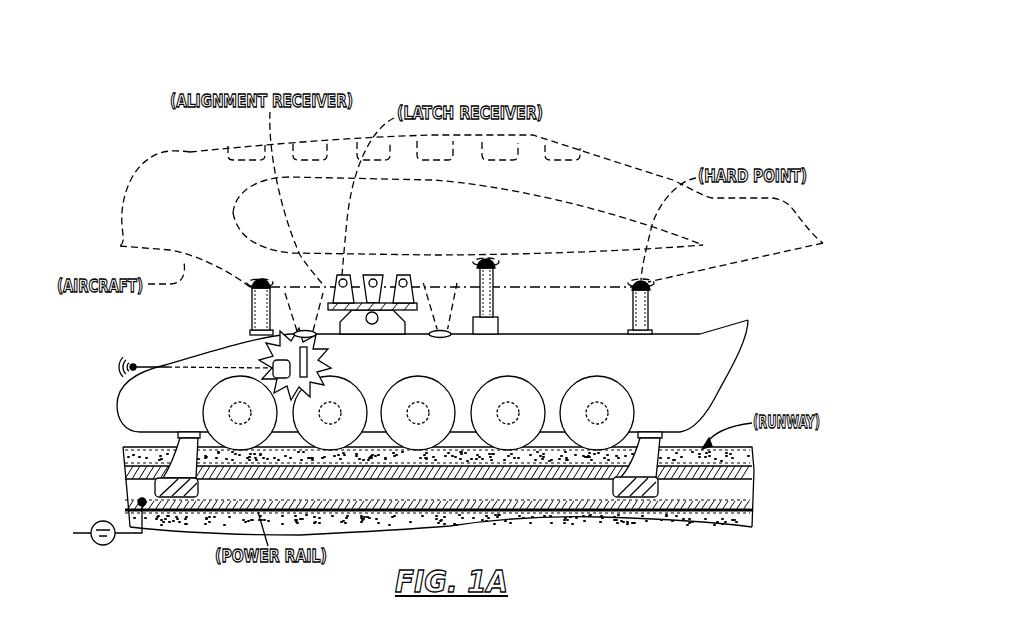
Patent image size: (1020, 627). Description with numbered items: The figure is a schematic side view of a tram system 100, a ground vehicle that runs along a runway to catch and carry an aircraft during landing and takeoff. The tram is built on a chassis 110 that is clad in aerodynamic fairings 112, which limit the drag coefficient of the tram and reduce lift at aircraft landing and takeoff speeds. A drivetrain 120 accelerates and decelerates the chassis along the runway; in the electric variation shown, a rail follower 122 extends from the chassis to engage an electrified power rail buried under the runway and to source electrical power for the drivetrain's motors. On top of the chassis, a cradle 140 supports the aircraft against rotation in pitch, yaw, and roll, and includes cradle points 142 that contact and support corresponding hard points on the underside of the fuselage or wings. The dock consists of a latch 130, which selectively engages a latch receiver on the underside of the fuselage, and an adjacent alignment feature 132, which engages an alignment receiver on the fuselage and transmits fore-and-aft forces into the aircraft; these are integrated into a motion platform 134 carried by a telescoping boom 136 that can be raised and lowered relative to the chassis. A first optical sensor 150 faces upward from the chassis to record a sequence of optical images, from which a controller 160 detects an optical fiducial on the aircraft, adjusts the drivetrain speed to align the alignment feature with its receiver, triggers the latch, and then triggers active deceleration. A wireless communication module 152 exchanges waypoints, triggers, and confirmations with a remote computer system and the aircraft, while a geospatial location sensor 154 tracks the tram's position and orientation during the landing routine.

The tram system 100 is at (661, 131).
The chassis 110 is at (737, 374).
The aerodynamic fairings 112 is at (745, 340).
The drivetrain 120 is at (424, 433).
The rail follower 122 is at (175, 490).
The latch 130 is at (404, 279).
The alignment feature 132 is at (343, 279).
The motion platform 134 is at (416, 306).
The telescoping boom 136 is at (378, 316).
The cradle 140 is at (570, 333).
The cradle points 142 is at (641, 280).
The first optical sensor 150 is at (476, 320).
The wireless communication module 152 is at (134, 365).
The geospatial location sensor 154 is at (296, 355).
The controller 160 is at (272, 365).